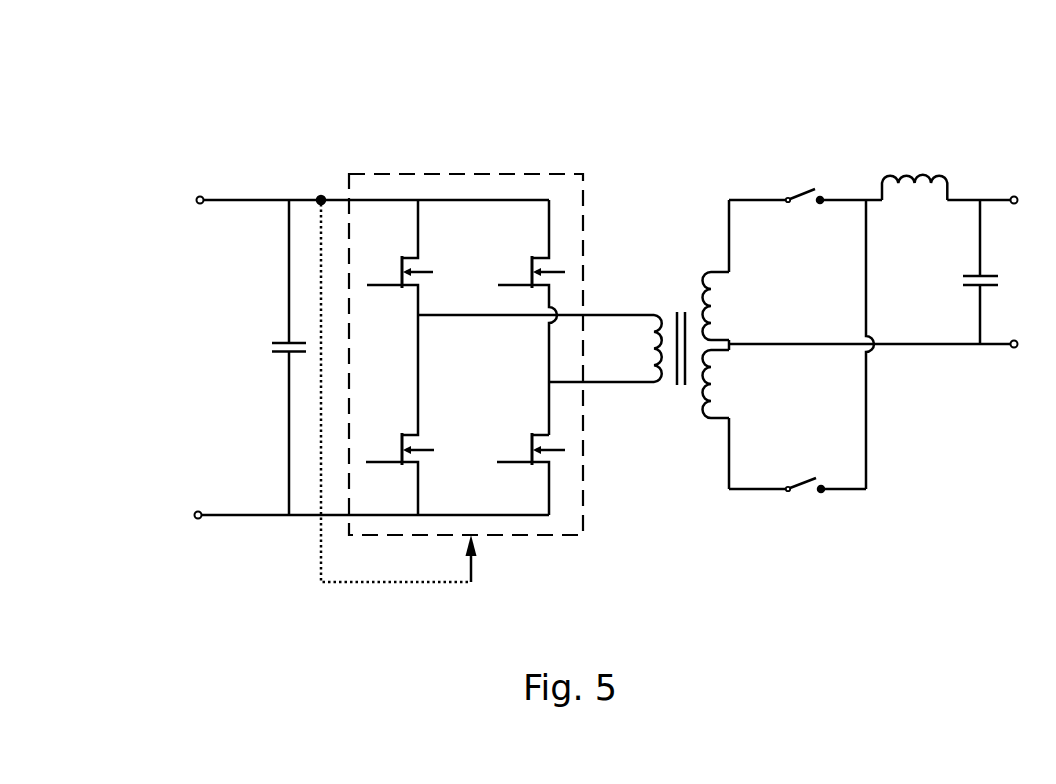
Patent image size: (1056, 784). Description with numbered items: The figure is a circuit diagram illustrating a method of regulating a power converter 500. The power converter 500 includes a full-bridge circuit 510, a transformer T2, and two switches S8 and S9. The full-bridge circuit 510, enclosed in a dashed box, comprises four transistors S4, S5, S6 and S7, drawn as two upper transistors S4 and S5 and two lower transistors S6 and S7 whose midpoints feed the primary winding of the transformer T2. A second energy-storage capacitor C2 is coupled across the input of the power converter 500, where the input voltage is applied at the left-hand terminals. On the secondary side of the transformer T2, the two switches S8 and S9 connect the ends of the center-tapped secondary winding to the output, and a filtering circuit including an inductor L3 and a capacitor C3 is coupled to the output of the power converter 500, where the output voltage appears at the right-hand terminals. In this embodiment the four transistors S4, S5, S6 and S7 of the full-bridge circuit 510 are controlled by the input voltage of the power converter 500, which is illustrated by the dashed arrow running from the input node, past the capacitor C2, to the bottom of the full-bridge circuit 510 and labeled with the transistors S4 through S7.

The power converter 500 is at (581, 43).
The full-bridge circuit 510 is at (463, 174).
The transistor S4 is at (395, 257).
The transistor S5 is at (528, 317).
The transistor S6 is at (393, 415).
The transistor S7 is at (528, 474).
The switch S8 is at (805, 215).
The switch S9 is at (797, 505).
The second energy-storage capacitor C2 is at (268, 357).
The capacitor C3 is at (961, 272).
The inductor L3 is at (914, 204).
The transformer T2 is at (691, 344).